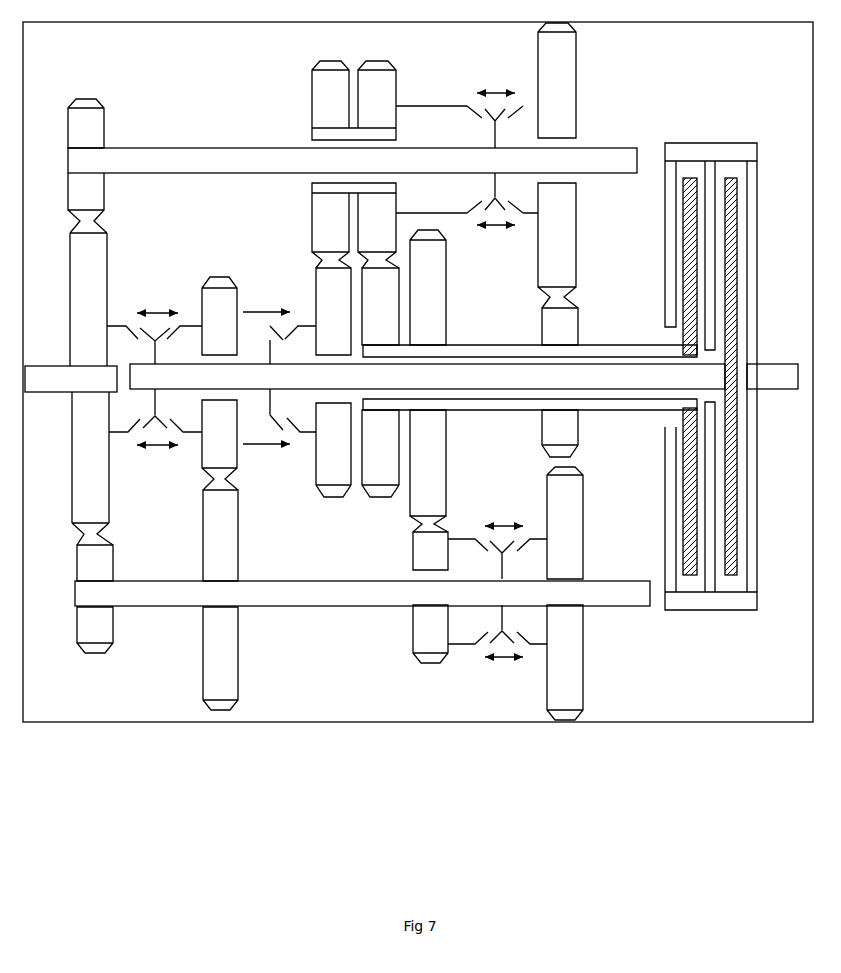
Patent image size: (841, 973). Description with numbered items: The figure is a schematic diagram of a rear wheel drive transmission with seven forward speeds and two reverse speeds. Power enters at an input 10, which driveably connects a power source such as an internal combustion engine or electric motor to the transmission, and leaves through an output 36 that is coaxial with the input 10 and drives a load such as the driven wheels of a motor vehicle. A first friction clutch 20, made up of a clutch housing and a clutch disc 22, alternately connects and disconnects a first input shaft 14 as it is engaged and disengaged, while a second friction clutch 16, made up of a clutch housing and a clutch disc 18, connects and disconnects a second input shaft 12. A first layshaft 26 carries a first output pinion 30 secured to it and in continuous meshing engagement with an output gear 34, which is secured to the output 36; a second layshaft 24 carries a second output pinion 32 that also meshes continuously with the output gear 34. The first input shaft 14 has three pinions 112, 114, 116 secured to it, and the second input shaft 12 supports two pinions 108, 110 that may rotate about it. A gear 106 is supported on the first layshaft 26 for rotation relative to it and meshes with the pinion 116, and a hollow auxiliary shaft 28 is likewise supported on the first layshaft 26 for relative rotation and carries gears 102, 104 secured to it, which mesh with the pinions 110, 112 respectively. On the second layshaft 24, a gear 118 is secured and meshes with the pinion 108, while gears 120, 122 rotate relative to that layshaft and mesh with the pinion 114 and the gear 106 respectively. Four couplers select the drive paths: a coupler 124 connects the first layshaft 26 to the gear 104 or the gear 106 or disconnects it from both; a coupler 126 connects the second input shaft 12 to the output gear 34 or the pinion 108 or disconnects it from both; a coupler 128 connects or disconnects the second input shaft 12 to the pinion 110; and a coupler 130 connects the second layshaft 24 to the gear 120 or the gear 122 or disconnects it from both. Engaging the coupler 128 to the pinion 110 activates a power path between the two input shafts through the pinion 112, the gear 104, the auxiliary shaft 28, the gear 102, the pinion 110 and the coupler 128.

The input 10 is at (772, 376).
The second input shaft 12 is at (427, 376).
The first input shaft 14 is at (637, 345).
The second friction clutch 16 is at (727, 154).
The clutch disc 18 is at (732, 263).
The first friction clutch 20 is at (685, 151).
The clutch disc 22 is at (686, 277).
The second layshaft 24 is at (362, 593).
The first layshaft 26 is at (352, 160).
The auxiliary shaft 28 is at (312, 136).
The first output pinion 30 is at (86, 123).
The second output pinion 32 is at (95, 599).
The output gear 34 is at (90, 359).
The output 36 is at (71, 379).
The gear 102 is at (354, 225).
The gear 104 is at (378, 230).
The gear 106 is at (558, 165).
The pinion 108 is at (219, 316).
The pinion 110 is at (333, 382).
The pinion 112 is at (380, 382).
The pinion 114 is at (428, 373).
The pinion 116 is at (560, 382).
The gear 118 is at (220, 555).
The gear 120 is at (429, 589).
The gear 122 is at (565, 593).
The coupler 124 is at (495, 90).
The coupler 126 is at (155, 311).
The coupler 128 is at (273, 311).
The coupler 130 is at (504, 523).